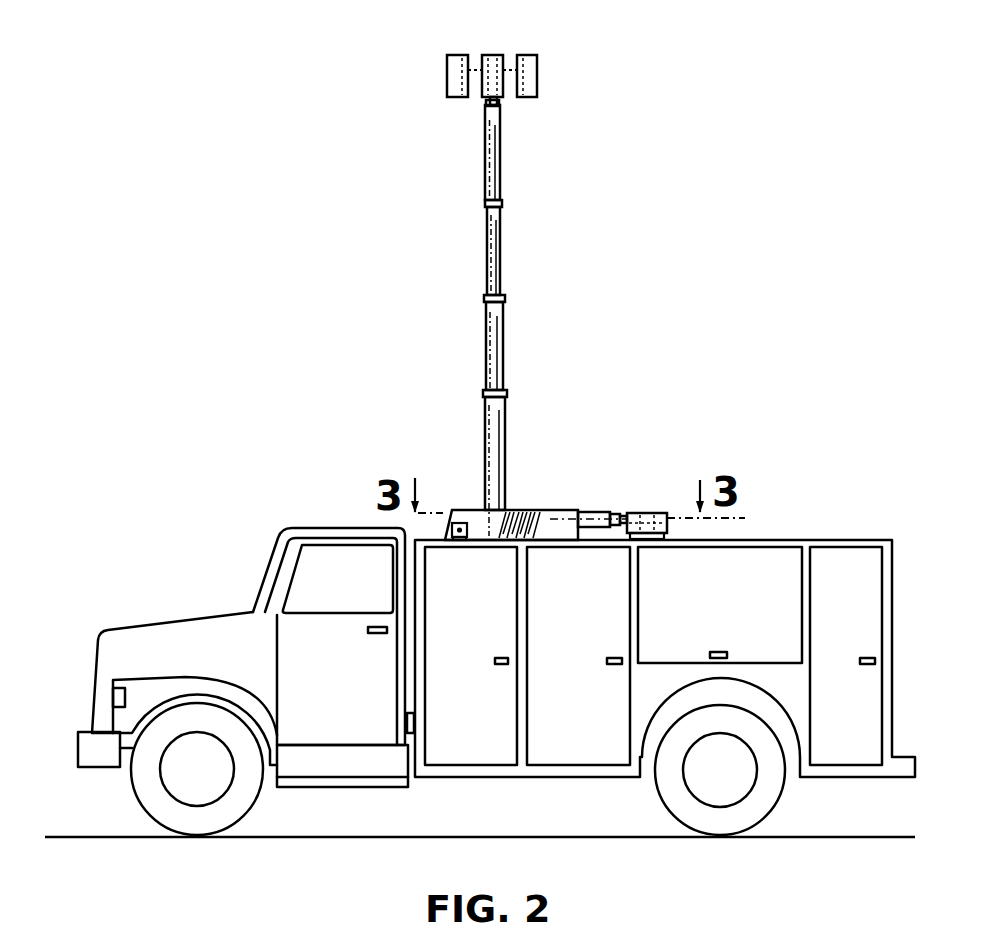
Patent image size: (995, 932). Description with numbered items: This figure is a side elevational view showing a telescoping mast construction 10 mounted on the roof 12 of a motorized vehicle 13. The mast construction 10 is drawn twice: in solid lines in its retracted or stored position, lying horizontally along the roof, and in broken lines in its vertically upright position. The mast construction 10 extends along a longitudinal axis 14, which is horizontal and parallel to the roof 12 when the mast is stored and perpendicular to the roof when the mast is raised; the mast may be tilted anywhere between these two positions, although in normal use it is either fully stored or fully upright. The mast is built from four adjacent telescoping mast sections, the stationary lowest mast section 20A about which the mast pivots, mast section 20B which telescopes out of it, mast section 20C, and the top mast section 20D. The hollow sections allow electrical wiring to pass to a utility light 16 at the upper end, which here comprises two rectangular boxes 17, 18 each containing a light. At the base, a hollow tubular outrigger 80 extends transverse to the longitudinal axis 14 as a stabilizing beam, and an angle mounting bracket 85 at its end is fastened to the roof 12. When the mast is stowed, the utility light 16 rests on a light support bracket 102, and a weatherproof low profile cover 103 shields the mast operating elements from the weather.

The telescoping mast construction 10 is at (571, 310).
The roof 12 is at (770, 538).
The motorized vehicle 13 is at (173, 575).
The longitudinal axis 14 is at (581, 316).
The utility light 16 is at (540, 308).
The rectangular box 17 is at (538, 86).
The rectangular box 18 is at (447, 78).
The lowest mast section 20A is at (486, 433).
The mast section 20B is at (504, 355).
The mast section 20C is at (488, 246).
The top mast section 20D is at (499, 140).
The tubular outrigger 80 is at (459, 522).
The mounting bracket 85 is at (458, 541).
The light support bracket 102 is at (647, 538).
The weatherproof low profile cover 103 is at (527, 508).